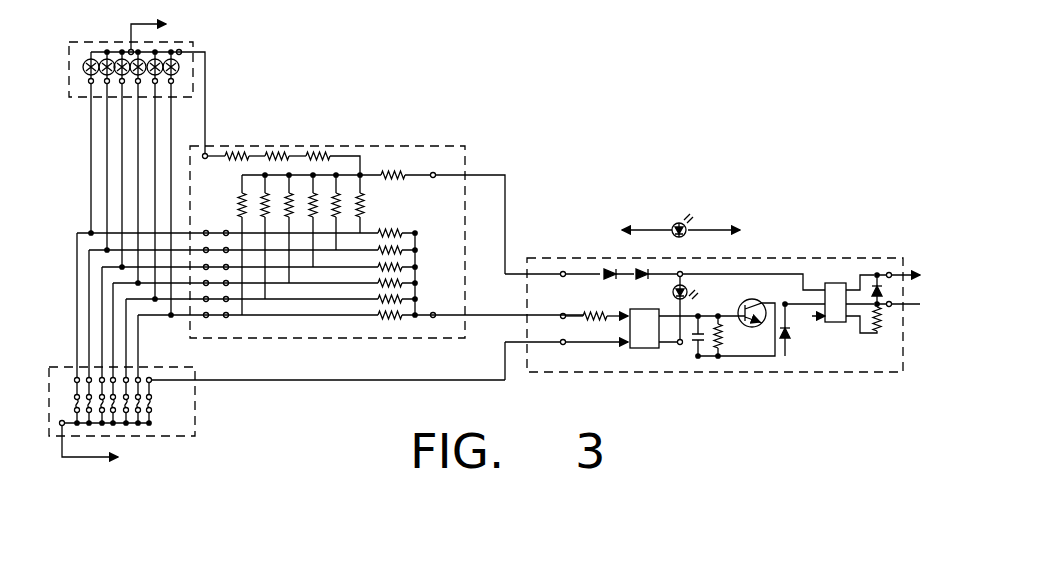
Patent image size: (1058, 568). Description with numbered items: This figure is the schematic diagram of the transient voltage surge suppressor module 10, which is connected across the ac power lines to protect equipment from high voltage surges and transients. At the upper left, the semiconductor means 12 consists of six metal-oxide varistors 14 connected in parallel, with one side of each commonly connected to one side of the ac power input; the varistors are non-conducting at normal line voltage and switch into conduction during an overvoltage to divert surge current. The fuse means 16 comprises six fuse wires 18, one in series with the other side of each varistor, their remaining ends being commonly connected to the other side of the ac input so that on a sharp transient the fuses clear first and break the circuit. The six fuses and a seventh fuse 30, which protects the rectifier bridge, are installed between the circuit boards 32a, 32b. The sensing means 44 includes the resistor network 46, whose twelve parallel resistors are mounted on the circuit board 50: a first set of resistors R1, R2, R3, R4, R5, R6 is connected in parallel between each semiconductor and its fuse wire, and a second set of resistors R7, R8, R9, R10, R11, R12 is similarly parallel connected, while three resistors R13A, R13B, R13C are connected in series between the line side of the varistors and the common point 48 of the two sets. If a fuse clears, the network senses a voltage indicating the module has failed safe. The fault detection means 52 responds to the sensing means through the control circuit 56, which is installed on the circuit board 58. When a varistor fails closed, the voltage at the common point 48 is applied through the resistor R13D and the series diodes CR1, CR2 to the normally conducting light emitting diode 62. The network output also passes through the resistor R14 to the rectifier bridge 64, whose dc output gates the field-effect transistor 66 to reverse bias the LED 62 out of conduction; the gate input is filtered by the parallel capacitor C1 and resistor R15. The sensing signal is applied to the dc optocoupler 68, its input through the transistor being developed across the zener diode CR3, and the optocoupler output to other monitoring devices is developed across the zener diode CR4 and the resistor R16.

The transient voltage surge suppressor module 10 is at (607, 144).
The semiconductor means 12 is at (236, 69).
The metal-oxide varistors 14 is at (181, 50).
The fuse means 16 is at (49, 364).
The fuse wires 18 is at (89, 426).
The seventh fuse 30 is at (96, 41).
The circuit board 32a is at (195, 400).
The circuit board 32b is at (328, 379).
The sensing means 44 is at (490, 139).
The resistor network 46 is at (361, 331).
The common point 48 is at (363, 174).
The circuit board 50 is at (467, 199).
The fault detection means 52 is at (731, 402).
The control circuit 56 is at (808, 249).
The circuit board 58 is at (860, 373).
The light emitting diode 62 is at (687, 288).
The rectifier bridge 64 is at (642, 350).
The field-effect transistor 66 is at (752, 298).
The dc optocoupler 68 is at (831, 283).
The resistor R1 is at (403, 231).
The resistor R2 is at (403, 248).
The resistor R3 is at (403, 265).
The resistor R4 is at (403, 281).
The resistor R5 is at (403, 297).
The resistor R6 is at (405, 316).
The resistor R7 is at (238, 205).
The resistor R8 is at (262, 212).
The resistor R9 is at (287, 218).
The resistor R10 is at (315, 218).
The resistor R11 is at (340, 212).
The resistor R12 is at (363, 204).
The series resistor R13A is at (237, 151).
The series resistor R13B is at (277, 151).
The series resistor R13C is at (318, 151).
The resistor R13D is at (394, 170).
The resistor R14 is at (593, 312).
The resistor R15 is at (722, 337).
The resistor R16 is at (883, 330).
The diode CR1 is at (610, 268).
The diode CR2 is at (642, 268).
The zener diode CR3 is at (790, 334).
The zener diode CR4 is at (884, 291).
The capacitor C1 is at (697, 339).